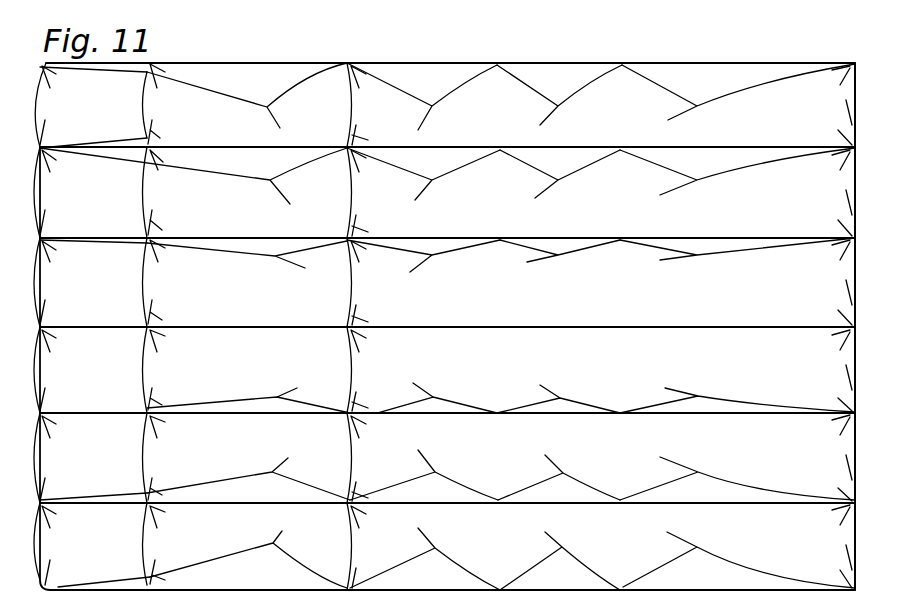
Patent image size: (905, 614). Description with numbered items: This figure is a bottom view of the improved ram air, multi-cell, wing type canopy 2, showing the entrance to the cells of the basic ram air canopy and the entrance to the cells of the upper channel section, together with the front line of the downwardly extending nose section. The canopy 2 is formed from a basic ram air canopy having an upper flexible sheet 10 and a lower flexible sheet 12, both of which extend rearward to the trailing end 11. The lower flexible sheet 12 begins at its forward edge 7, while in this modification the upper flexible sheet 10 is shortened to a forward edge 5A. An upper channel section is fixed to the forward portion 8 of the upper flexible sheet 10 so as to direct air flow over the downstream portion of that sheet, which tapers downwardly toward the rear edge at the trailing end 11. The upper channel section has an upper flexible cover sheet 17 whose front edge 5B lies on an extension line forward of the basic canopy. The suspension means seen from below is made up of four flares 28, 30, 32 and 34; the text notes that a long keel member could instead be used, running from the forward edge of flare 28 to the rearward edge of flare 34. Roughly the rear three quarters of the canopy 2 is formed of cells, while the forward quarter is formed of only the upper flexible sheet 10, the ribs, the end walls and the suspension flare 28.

The ram air, multi-cell, wing type canopy 2 is at (247, 48).
The upper flexible sheet 10 is at (303, 102).
The trailing end 11 is at (855, 67).
The lower flexible sheet 12 is at (600, 216).
The forward edge 7 is at (353, 290).
The forward portion 8 is at (150, 137).
The upper flexible cover sheet 17 is at (93, 211).
The forward edge 5A is at (148, 202).
The front edge 5B is at (34, 288).
The flare 28 is at (213, 77).
The flare 30 is at (403, 72).
The flare 32 is at (547, 68).
The flare 34 is at (682, 78).